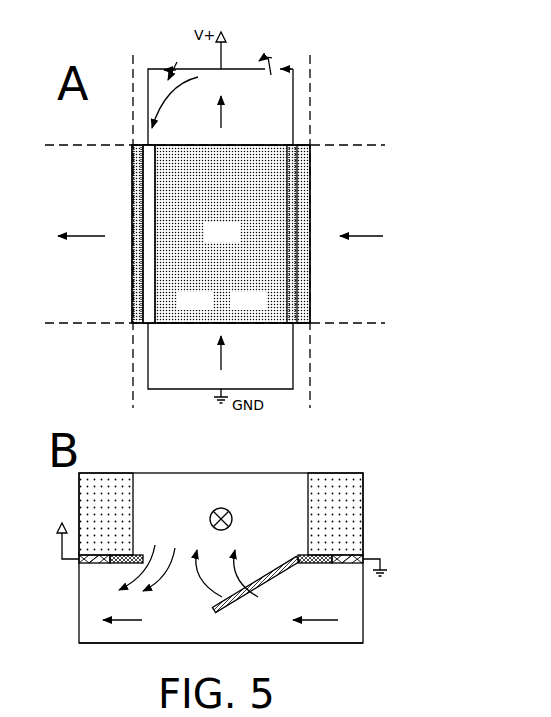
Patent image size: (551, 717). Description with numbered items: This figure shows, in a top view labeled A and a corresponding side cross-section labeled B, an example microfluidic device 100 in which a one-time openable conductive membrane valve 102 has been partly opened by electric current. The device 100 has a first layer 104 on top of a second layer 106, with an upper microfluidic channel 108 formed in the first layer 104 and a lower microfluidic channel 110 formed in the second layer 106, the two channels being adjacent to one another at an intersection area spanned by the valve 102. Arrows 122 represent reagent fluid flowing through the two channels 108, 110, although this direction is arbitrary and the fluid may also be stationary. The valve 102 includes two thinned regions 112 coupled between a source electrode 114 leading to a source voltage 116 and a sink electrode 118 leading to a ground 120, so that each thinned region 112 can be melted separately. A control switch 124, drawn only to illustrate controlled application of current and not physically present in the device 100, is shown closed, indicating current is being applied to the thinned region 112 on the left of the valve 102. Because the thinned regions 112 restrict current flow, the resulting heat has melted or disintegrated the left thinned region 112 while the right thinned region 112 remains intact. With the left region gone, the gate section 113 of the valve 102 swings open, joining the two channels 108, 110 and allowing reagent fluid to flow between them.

In FIG. 5A, the microfluidic device 100 is at (330, 36).
In FIG. 5B, the microfluidic device 100 is at (360, 464).
In FIG. 5A, the conductive membrane valve 102 is at (221, 234).
In FIG. 5B, the conductive membrane valve 102 is at (256, 543).
In FIG. 5B, the first microfluidic layer 104 is at (363, 500).
In FIG. 5B, the second microfluidic layer 106 is at (363, 629).
In FIG. 5A, the upper microfluidic channel 108 is at (241, 233).
In FIG. 5B, the upper microfluidic channel 108 is at (217, 507).
In FIG. 5A, the lower microfluidic channel 110 is at (220, 249).
In FIG. 5B, the lower microfluidic channel 110 is at (271, 629).
In FIG. 5A, the thinned region 112 is at (158, 292).
In FIG. 5B, the thinned region 112 is at (301, 567).
In FIG. 5B, the gate section 113 is at (258, 583).
In FIG. 5B, the source electrode 114 is at (95, 561).
In FIG. 5A, the source voltage 116 is at (243, 33).
In FIG. 5B, the source voltage 116 is at (50, 528).
In FIG. 5B, the sink electrode 118 is at (358, 556).
In FIG. 5A, the ground 120 is at (207, 402).
In FIG. 5A, the arrows 122 is at (358, 233).
In FIG. 5B, the arrows 122 is at (136, 633).
In FIG. 5A, the control switch 124 is at (150, 55).